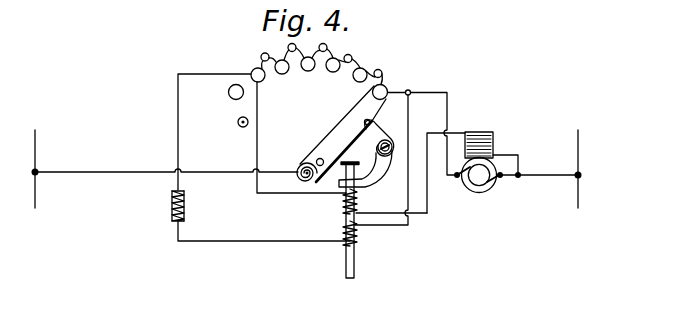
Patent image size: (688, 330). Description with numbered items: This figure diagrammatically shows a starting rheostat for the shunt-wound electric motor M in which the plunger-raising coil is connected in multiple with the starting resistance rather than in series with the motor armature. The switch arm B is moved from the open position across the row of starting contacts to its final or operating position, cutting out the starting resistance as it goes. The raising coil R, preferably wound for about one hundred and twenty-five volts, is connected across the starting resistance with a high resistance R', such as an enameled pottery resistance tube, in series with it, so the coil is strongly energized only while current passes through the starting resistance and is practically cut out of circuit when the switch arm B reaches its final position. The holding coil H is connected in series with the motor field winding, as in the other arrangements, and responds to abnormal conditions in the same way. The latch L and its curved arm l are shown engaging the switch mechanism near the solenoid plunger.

The brush arm (lever) B is at (337, 128).
The latch hook L is at (379, 130).
The curved arm of latch l is at (378, 169).
The helix coil H is at (345, 210).
The resistance coil R is at (340, 233).
The resistance coil R' is at (191, 206).
The electromagnet M is at (479, 135).